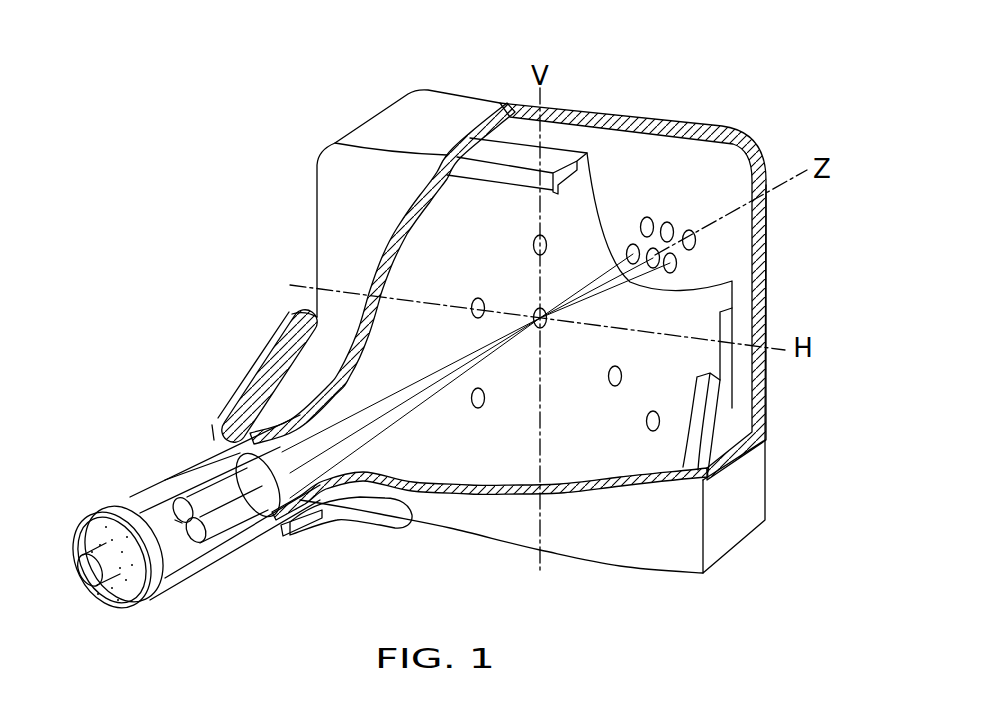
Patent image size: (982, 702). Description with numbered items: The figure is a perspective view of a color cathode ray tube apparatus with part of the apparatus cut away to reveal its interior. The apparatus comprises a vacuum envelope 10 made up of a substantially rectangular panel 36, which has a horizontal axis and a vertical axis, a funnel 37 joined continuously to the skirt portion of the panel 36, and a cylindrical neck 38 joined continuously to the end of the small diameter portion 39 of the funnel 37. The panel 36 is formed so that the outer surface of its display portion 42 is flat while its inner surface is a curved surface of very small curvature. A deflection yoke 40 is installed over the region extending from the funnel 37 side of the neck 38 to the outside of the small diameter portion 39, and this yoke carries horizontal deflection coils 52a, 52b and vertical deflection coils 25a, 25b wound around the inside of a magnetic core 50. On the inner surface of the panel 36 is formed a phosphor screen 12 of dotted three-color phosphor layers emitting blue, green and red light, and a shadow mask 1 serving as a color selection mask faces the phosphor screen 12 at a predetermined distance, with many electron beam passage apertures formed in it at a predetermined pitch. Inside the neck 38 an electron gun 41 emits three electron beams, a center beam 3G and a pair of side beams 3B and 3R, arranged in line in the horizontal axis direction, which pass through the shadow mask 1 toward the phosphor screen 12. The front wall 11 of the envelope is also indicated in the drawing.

The shadow mask 1 is at (735, 297).
The vacuum envelope 10 is at (771, 493).
The front wall 11 is at (752, 530).
The phosphor screen 12 is at (668, 215).
The panel 36 is at (768, 234).
The funnel 37 is at (624, 578).
The neck 38 is at (210, 567).
The small diameter portion 39 is at (367, 490).
The deflection yoke 40 is at (232, 392).
The electron gun 41 is at (197, 477).
The display portion 42 is at (464, 92).
The magnetic core 50 is at (327, 527).
The horizontal deflection coil 52a is at (237, 324).
The horizontal deflection coil 52b is at (237, 324).
The vertical deflection coil 25a is at (237, 324).
The vertical deflection coil 25b is at (283, 343).
The side beam 3R is at (407, 381).
The center beam 3G is at (382, 412).
The side beam 3B is at (428, 400).